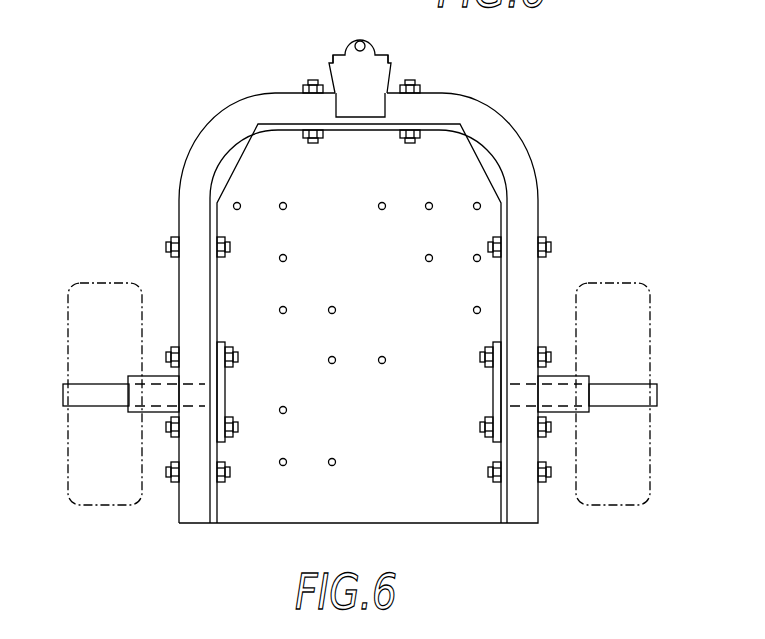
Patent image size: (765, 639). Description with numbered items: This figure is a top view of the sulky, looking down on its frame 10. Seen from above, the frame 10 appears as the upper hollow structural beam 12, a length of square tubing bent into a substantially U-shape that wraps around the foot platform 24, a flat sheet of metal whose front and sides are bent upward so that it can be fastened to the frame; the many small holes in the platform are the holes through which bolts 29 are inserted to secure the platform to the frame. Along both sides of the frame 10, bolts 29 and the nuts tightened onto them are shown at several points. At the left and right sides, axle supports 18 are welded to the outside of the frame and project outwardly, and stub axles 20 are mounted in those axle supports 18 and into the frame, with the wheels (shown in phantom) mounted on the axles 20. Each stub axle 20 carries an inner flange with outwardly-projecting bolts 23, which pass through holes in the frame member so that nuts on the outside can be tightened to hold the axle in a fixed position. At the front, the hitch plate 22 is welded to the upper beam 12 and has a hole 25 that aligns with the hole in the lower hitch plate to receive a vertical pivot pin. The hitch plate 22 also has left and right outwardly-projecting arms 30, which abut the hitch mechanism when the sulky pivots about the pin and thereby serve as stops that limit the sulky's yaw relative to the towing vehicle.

The frame 10 is at (250, 116).
The upper hollow structural beam 12 is at (512, 137).
The axle support 18 is at (152, 380).
The stub axle 20 is at (88, 397).
The hitch plate 22 is at (360, 29).
The bolt 23 is at (236, 430).
The foot platform 24 is at (364, 282).
The hole 25 is at (366, 45).
The bolt 29 is at (167, 247).
The outwardly-projecting arm 30 is at (331, 62).